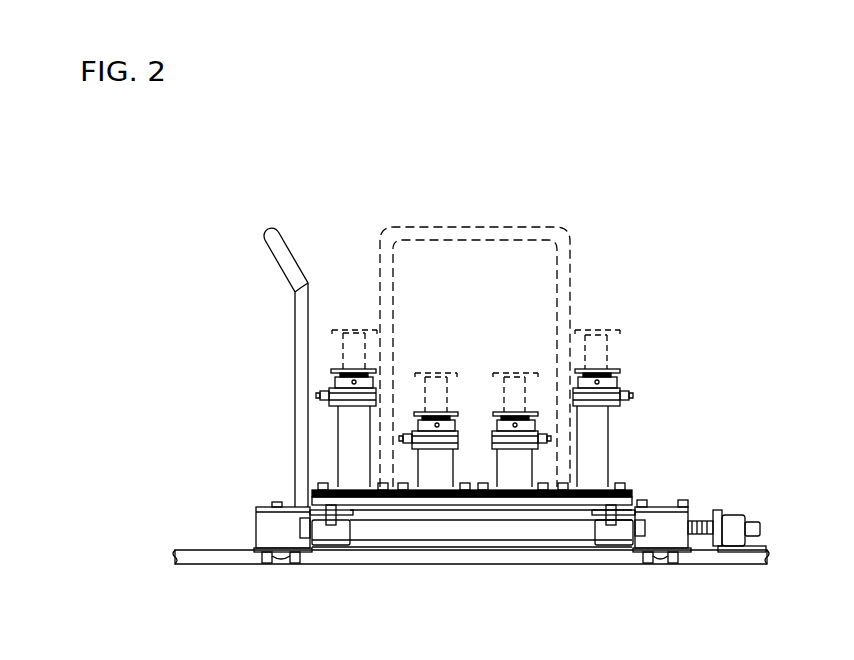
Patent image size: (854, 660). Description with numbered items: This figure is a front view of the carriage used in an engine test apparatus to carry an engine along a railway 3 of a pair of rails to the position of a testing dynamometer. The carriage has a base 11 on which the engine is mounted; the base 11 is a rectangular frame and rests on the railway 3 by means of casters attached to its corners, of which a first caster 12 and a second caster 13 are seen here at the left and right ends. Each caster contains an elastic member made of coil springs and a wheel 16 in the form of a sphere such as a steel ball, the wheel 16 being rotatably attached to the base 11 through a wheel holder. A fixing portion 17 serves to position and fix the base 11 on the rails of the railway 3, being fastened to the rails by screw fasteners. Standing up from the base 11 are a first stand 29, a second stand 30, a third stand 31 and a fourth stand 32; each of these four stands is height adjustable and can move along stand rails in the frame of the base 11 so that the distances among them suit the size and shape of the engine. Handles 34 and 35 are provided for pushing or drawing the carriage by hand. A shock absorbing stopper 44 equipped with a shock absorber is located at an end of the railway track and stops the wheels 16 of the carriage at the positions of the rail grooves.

The railway 3 is at (285, 562).
The base 11 is at (392, 564).
The first caster 12 is at (248, 510).
The second caster 13 is at (658, 506).
The wheel 16 is at (283, 520).
The fixing portion 17 is at (255, 548).
The first stand 29 is at (417, 411).
The second stand 30 is at (529, 411).
The third stand 31 is at (338, 368).
The fourth stand 32 is at (606, 368).
The handle 34 is at (285, 248).
The handle 35 is at (448, 226).
The shock absorbing stopper 44 is at (718, 520).